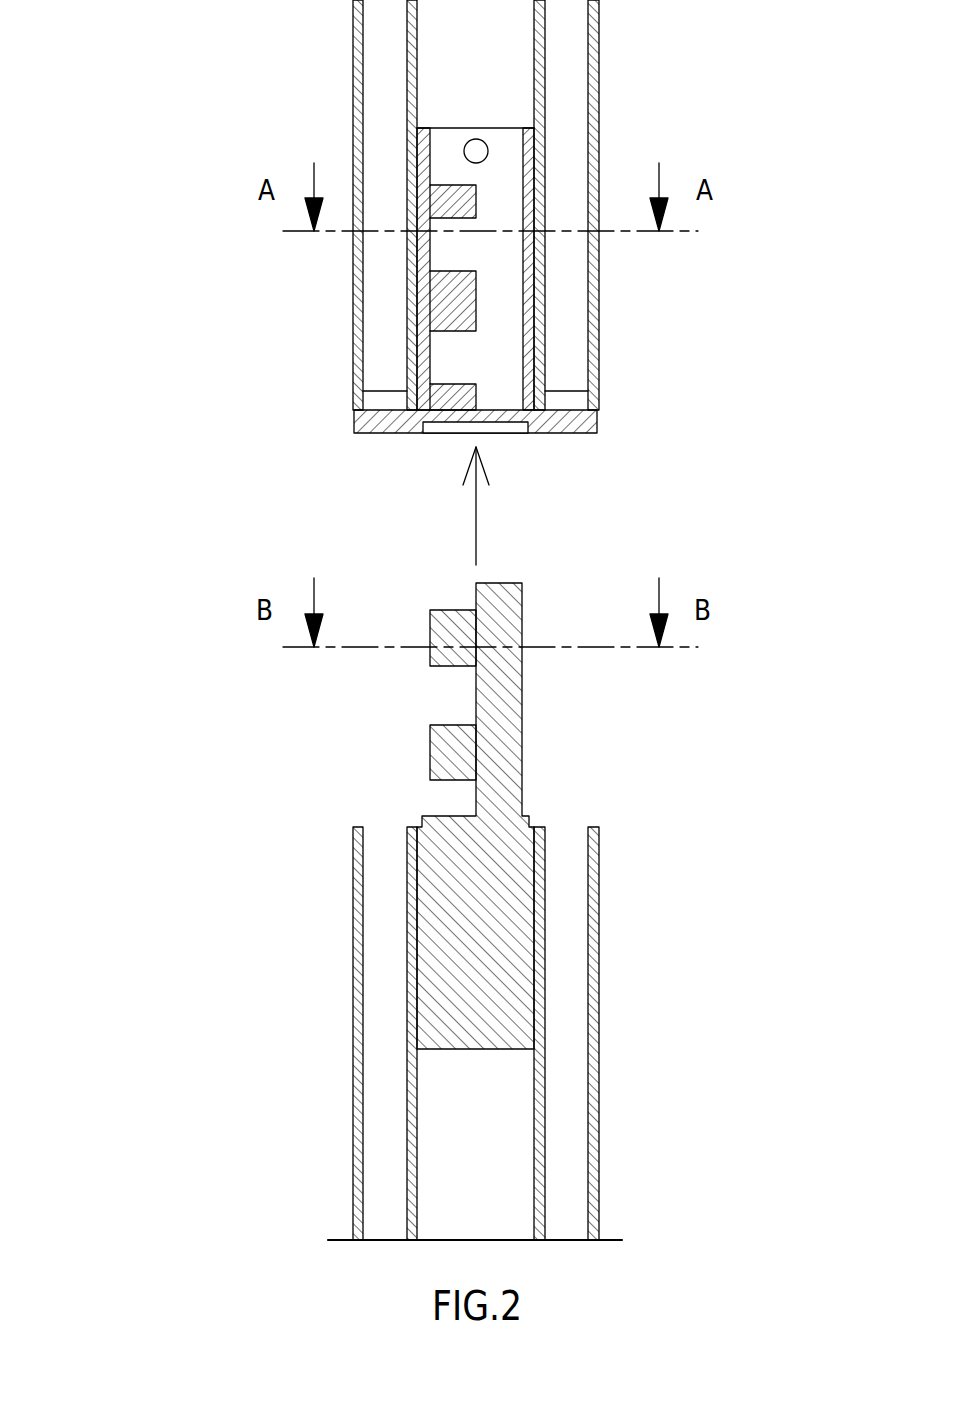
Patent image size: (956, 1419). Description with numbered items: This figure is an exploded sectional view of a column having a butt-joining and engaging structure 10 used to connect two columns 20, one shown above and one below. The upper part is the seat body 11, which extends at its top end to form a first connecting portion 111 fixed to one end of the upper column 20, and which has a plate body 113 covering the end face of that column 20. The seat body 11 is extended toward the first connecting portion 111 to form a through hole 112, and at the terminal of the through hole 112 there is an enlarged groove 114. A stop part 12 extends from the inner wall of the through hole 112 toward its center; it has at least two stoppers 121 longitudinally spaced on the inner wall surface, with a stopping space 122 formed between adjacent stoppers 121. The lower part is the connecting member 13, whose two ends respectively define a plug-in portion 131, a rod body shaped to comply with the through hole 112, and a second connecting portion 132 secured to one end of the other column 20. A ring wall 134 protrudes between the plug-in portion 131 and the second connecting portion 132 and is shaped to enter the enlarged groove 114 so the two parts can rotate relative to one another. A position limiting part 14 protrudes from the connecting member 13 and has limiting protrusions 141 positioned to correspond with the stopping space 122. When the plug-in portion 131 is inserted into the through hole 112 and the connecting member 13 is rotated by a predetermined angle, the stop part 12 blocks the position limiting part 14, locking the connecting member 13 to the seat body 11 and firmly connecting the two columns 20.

The butt-joining and engaging structure 10 is at (88, 245).
The seat body 11 is at (353, 423).
The stop part 12 is at (182, 143).
The connecting member 13 is at (421, 817).
The position limiting part 14 is at (153, 675).
The column 20 is at (351, 28).
The first connecting portion 111 is at (530, 180).
The through hole 112 is at (490, 207).
The plate body 113 is at (388, 420).
The enlarged groove 114 is at (525, 428).
The stopper 121 is at (443, 202).
The stopping space 122 is at (452, 252).
The plug-in portion 131 is at (518, 725).
The second connecting portion 132 is at (514, 953).
The ring wall 134 is at (528, 818).
The limiting protrusion 141 is at (438, 660).